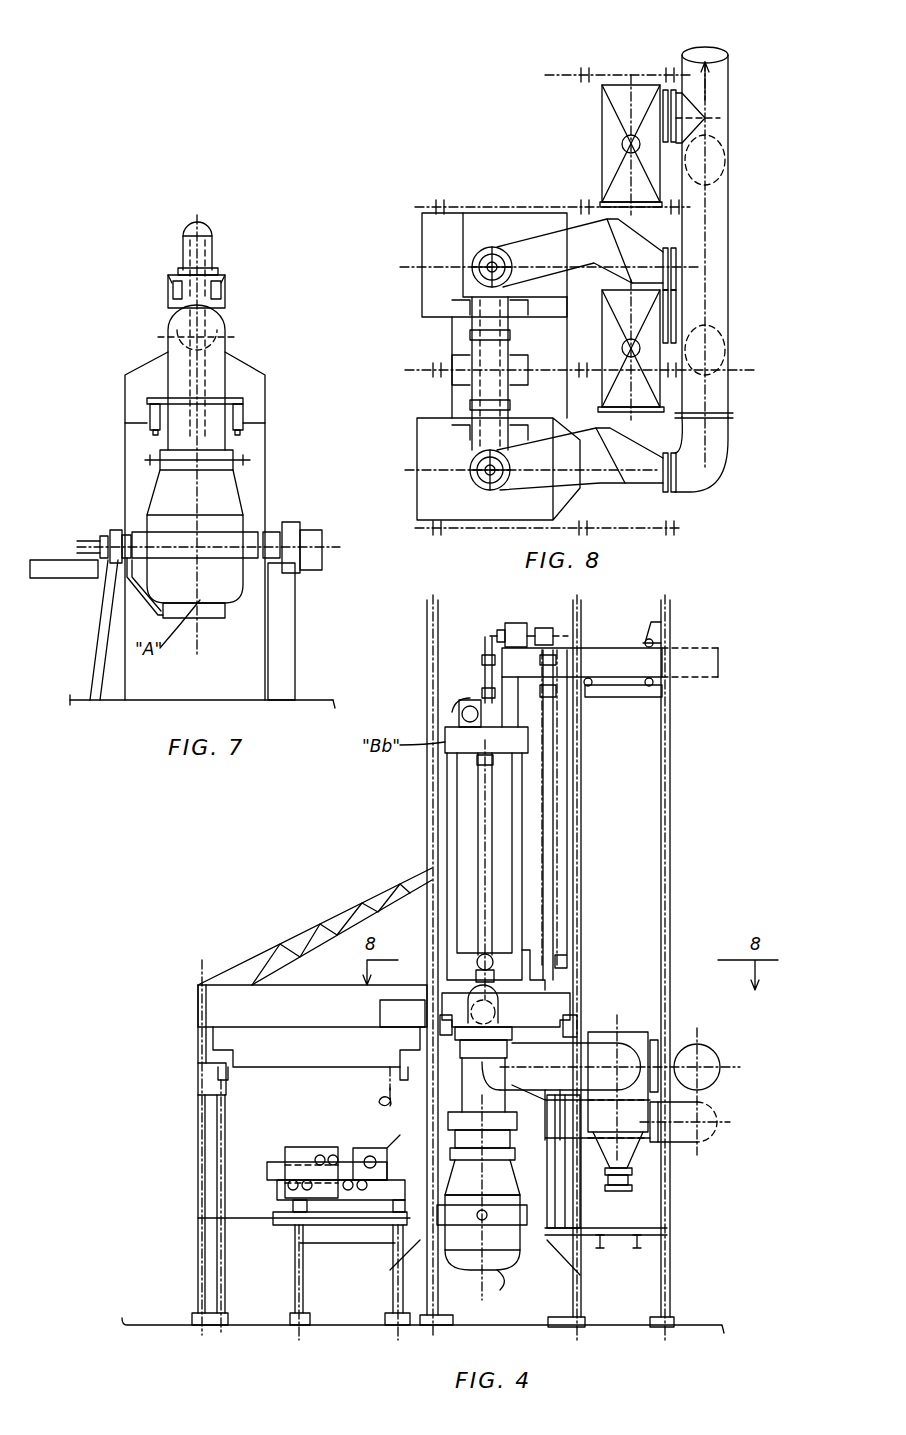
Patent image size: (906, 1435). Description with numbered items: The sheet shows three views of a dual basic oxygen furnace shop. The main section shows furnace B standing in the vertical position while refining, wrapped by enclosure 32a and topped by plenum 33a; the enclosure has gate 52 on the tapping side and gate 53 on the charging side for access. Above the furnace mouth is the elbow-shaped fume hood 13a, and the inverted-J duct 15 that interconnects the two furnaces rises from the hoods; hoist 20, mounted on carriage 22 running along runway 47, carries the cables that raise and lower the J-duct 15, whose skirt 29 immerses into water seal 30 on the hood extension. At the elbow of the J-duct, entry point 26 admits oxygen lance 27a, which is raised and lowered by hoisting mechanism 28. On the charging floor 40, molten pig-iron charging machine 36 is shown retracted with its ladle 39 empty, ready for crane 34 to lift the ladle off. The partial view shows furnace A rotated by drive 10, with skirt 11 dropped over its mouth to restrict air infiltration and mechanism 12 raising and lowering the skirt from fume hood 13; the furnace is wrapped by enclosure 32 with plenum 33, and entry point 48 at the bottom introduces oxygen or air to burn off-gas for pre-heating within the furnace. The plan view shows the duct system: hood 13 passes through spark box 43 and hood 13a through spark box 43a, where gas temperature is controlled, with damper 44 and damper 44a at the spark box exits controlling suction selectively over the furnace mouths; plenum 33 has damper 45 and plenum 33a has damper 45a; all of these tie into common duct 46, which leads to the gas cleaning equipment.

In FIG. 7, the drive 10 is at (308, 525).
In FIG. 7, the skirt 11 is at (233, 465).
In FIG. 4, the skirt 11 is at (515, 1155).
In FIG. 7, the mechanism 12 is at (150, 420).
In FIG. 7, the fume hood 13 is at (225, 370).
In FIG. 8, the fume hood 13 is at (540, 235).
In FIG. 8, the fume hood 13a is at (598, 428).
In FIG. 4, the fume hood 13a is at (611, 1091).
In FIG. 7, the J-duct 15 is at (212, 257).
In FIG. 8, the J-duct 15 is at (470, 350).
In FIG. 4, the J-duct 15 is at (468, 1000).
In FIG. 4, the hoist 20 is at (460, 712).
In FIG. 8, the carriage 22 is at (452, 398).
In FIG. 4, the carriage 22 is at (506, 1010).
In FIG. 8, the entry points 26 is at (480, 278).
In FIG. 4, the oxygen lance 27a is at (483, 678).
In FIG. 4, the hoisting mechanism 28 is at (500, 633).
In FIG. 7, the skirt 29 is at (218, 271).
In FIG. 7, the water seal 30 is at (225, 300).
In FIG. 7, the enclosure 32 is at (125, 477).
In FIG. 8, the enclosure 32 is at (430, 235).
In FIG. 4, the enclosure 32a is at (585, 1175).
In FIG. 7, the plenum 33 is at (125, 393).
In FIG. 8, the plenum 33 is at (500, 207).
In FIG. 8, the plenum 33a is at (578, 500).
In FIG. 4, the plenum 33a is at (482, 1087).
In FIG. 4, the crane 34 is at (312, 1101).
In FIG. 4, the molten pig-iron charging machine 36 is at (313, 1135).
In FIG. 4, the ladle 39 is at (375, 1148).
In FIG. 4, the charging floor 40 is at (345, 1218).
In FIG. 8, the spark box 43 is at (602, 133).
In FIG. 8, the spark box 43a is at (600, 340).
In FIG. 4, the spark box 43a is at (610, 1032).
In FIG. 8, the damper 44 is at (676, 113).
In FIG. 8, the damper 44a is at (676, 318).
In FIG. 4, the damper 44a is at (658, 1045).
In FIG. 8, the damper 45 is at (676, 270).
In FIG. 8, the damper 45a is at (668, 495).
In FIG. 4, the damper 45a is at (662, 1145).
In FIG. 8, the common duct 46 is at (722, 345).
In FIG. 4, the common duct 46 is at (720, 1060).
In FIG. 4, the runway 47 is at (440, 1020).
In FIG. 7, the entry point 48 is at (160, 612).
In FIG. 4, the gate 52 is at (585, 1212).
In FIG. 4, the gate 53 is at (598, 648).